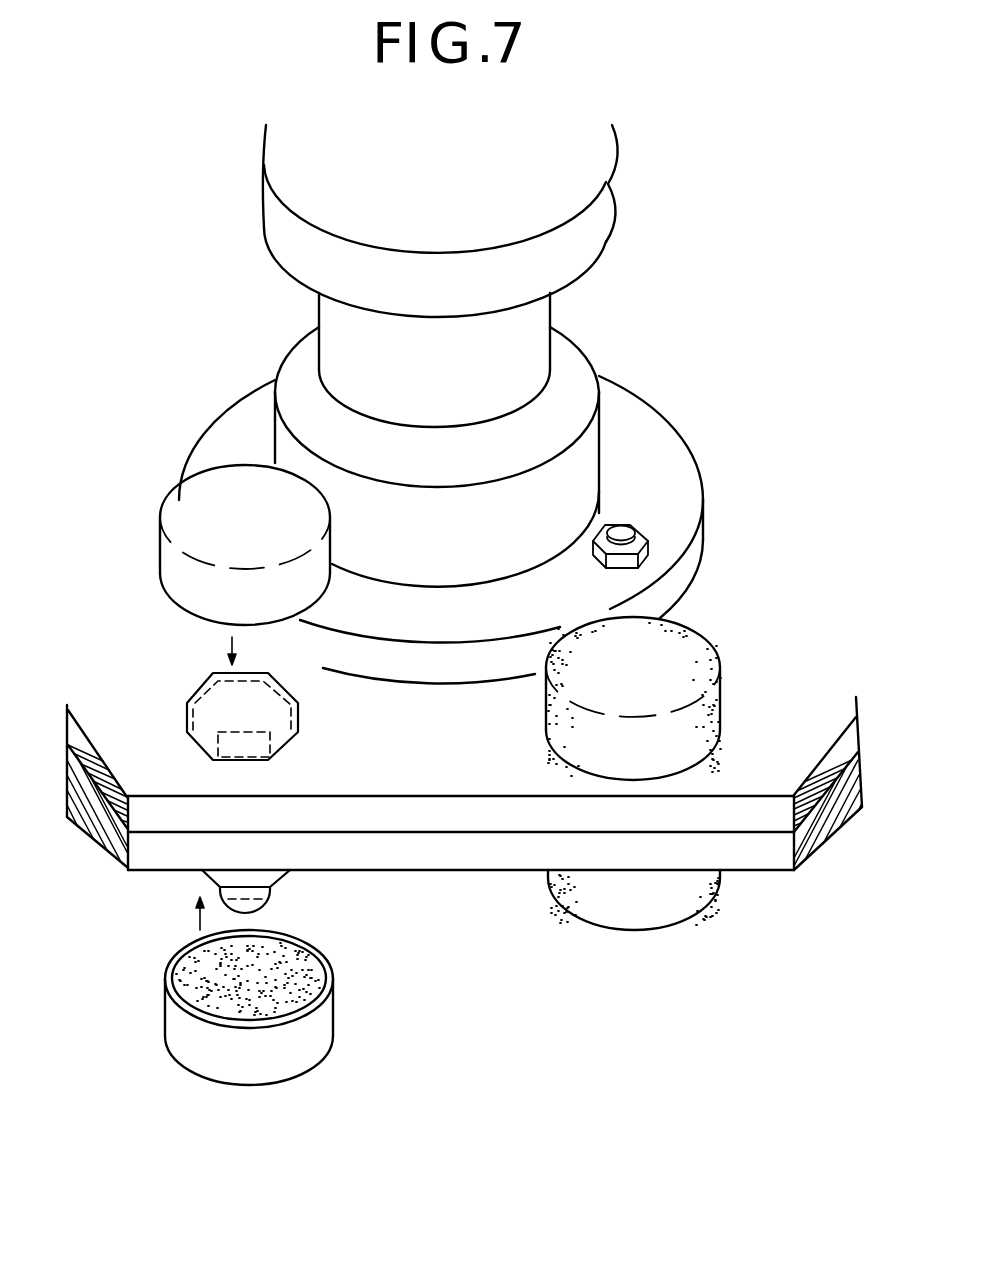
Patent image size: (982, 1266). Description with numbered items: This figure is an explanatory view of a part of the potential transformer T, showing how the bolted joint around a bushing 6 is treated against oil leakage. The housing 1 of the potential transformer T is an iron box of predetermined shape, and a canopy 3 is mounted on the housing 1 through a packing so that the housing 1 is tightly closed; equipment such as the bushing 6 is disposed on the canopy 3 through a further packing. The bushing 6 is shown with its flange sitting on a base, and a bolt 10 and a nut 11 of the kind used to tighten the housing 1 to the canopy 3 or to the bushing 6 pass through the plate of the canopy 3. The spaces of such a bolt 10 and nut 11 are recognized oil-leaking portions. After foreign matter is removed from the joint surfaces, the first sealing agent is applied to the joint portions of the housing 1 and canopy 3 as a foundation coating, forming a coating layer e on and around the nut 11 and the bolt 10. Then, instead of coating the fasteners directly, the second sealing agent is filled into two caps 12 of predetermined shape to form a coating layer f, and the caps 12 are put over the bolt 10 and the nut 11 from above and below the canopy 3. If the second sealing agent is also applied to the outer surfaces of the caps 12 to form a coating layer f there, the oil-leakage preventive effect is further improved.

The potential transformer T is at (457, 404).
The bushing 6 is at (590, 226).
The cap 12 is at (180, 502).
The bolt 10 is at (225, 685).
The coating layer e is at (239, 780).
The nut 11 is at (277, 890).
The canopy 3 is at (472, 812).
The housing 1 is at (464, 821).
The coating layer f is at (668, 647).